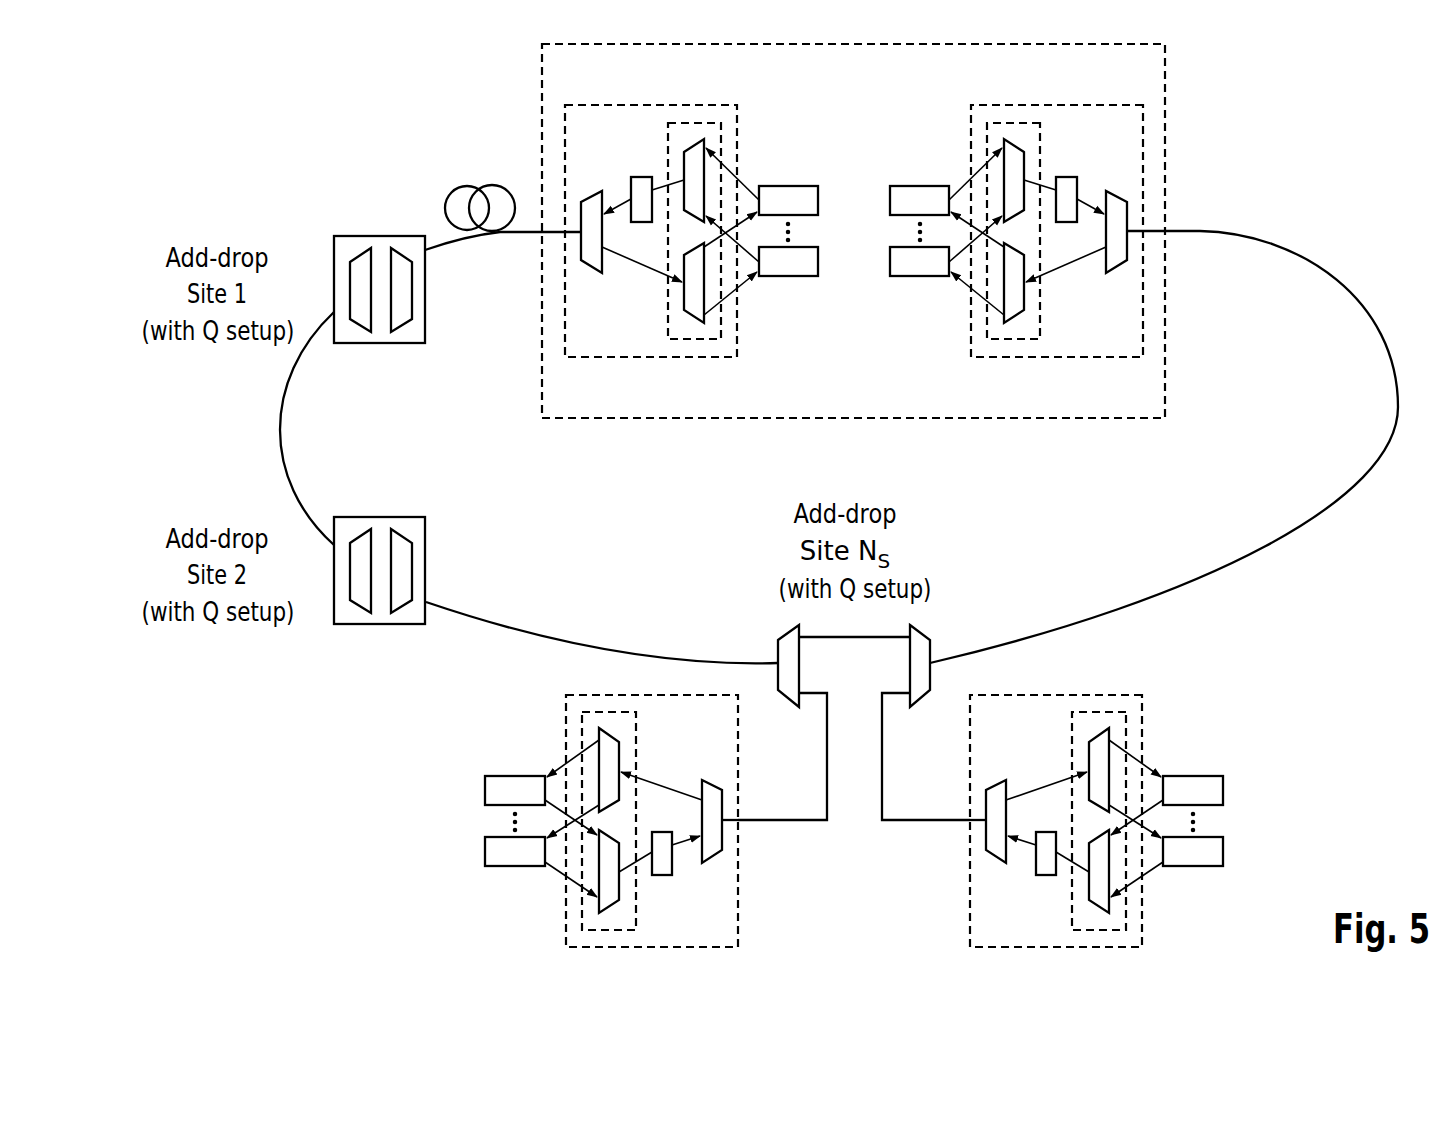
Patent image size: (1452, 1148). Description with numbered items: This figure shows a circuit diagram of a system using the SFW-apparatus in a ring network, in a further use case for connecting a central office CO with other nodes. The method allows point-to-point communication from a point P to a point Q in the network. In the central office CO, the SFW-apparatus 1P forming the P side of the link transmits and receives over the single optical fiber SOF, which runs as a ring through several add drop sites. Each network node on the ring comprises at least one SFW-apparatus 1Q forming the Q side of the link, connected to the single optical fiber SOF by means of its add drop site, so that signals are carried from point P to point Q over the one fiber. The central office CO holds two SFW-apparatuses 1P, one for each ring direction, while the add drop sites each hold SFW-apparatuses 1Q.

The central office CO is at (1165, 78).
The SFW-apparatus at point P 1P is at (566, 128).
The point P is at (760, 346).
The single optical fiber SOF is at (458, 190).
The SFW-apparatus at point Q 1Q is at (566, 722).
The point Q is at (543, 918).